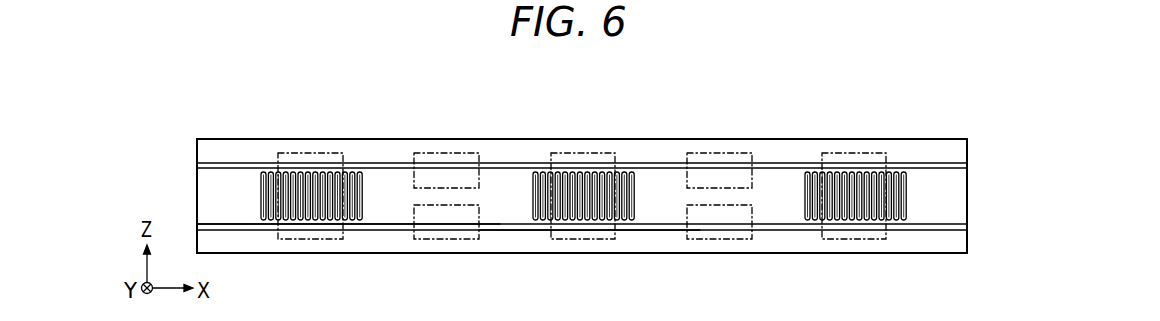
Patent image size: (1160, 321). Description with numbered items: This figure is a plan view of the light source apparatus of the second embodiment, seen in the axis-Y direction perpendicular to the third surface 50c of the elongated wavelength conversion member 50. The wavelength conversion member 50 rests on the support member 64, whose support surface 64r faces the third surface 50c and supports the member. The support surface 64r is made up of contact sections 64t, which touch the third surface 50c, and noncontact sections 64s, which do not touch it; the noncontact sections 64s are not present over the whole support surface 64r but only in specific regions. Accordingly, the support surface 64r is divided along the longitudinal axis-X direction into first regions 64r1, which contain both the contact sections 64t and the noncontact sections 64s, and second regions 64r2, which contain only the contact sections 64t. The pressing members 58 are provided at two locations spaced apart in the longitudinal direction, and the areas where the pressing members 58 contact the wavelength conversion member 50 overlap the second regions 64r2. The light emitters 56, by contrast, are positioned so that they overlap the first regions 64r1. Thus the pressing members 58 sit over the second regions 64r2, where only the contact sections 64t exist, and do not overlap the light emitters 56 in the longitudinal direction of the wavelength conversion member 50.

The wavelength conversion member 50 is at (915, 185).
The third surface 50c is at (936, 185).
The light emitter 56 is at (315, 153).
The pressing member 58 is at (446, 153).
The support member 64 is at (516, 125).
The noncontact section 64s is at (262, 205).
The contact section 64t is at (262, 176).
The support surface 64r is at (970, 194).
The first region 64r1 is at (355, 225).
The second region 64r2 is at (489, 225).